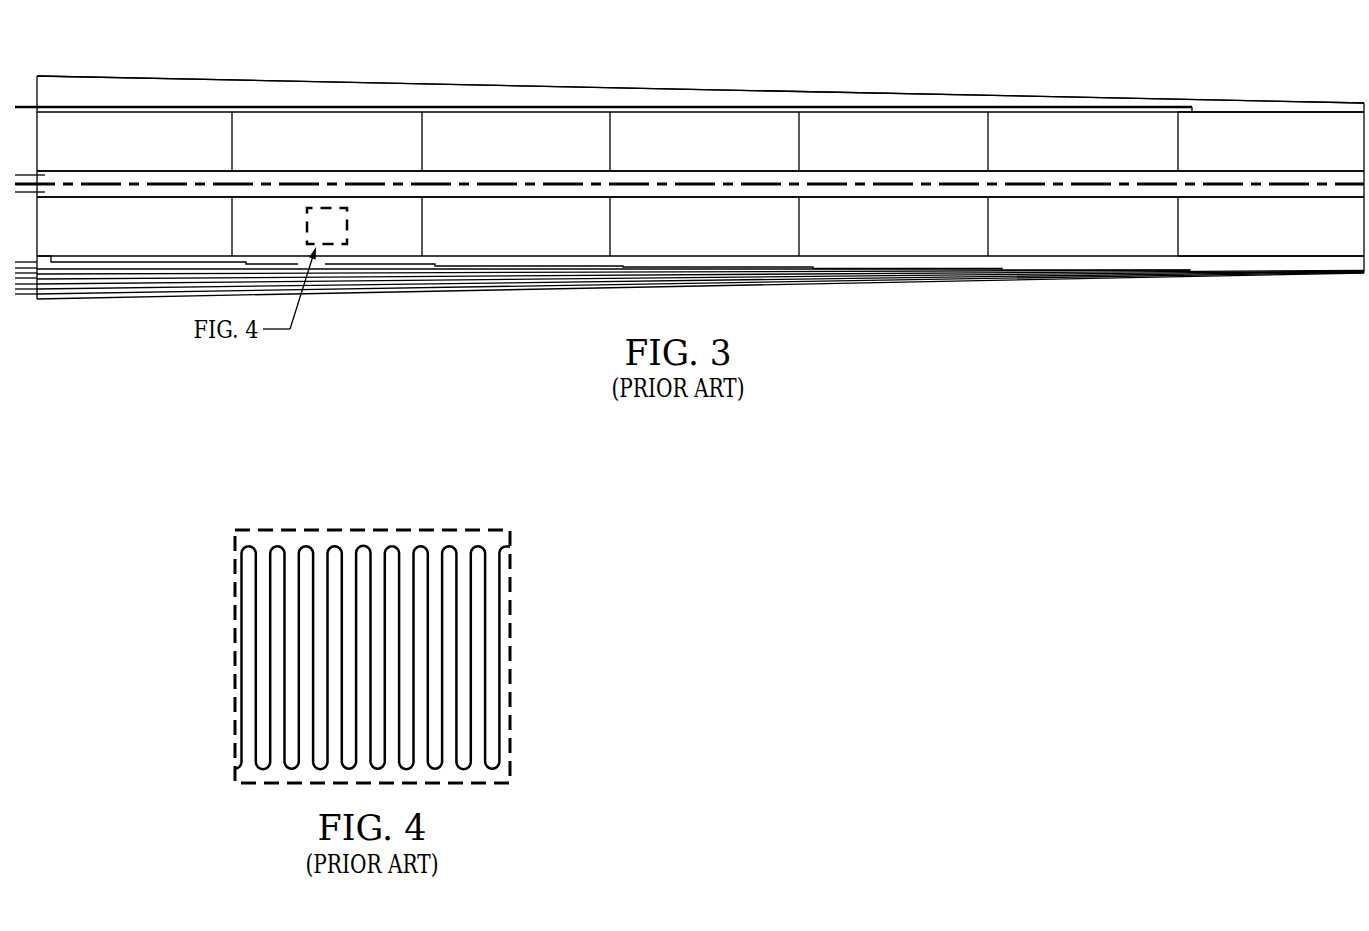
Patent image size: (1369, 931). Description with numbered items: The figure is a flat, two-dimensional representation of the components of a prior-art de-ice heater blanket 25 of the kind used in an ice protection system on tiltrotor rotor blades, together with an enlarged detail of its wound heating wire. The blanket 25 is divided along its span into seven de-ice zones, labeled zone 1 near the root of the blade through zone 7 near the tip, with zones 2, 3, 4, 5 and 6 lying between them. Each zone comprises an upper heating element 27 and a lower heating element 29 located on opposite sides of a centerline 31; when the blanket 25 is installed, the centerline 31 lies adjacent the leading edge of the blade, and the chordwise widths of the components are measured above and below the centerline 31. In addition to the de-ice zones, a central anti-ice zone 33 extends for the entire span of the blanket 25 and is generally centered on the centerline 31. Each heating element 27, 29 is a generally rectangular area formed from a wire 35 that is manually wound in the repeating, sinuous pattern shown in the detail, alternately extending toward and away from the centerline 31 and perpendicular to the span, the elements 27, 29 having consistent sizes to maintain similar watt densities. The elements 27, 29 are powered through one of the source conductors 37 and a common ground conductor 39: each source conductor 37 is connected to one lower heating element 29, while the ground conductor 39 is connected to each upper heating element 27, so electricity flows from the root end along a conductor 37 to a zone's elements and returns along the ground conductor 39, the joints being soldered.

In FIG. 3, the de-ice zone 1 is at (182, 152).
In FIG. 3, the de-ice zone 2 is at (371, 153).
In FIG. 3, the de-ice zone 3 is at (560, 157).
In FIG. 3, the de-ice zone 4 is at (749, 158).
In FIG. 3, the de-ice zone 5 is at (937, 160).
In FIG. 3, the de-ice zone 6 is at (1127, 162).
In FIG. 3, the de-ice zone 7 is at (1272, 91).
In FIG. 3, the de-ice heater blanket 25 is at (1150, 56).
In FIG. 3, the upper heating element 27 is at (1313, 135).
In FIG. 3, the lower heating element 29 is at (1287, 233).
In FIG. 3, the centerline 31 is at (665, 180).
In FIG. 3, the central anti-ice zone 33 is at (835, 180).
In FIG. 4, the wire 35 is at (487, 655).
In FIG. 3, the source conductors 37 is at (1067, 272).
In FIG. 3, the common ground conductor 39 is at (963, 107).